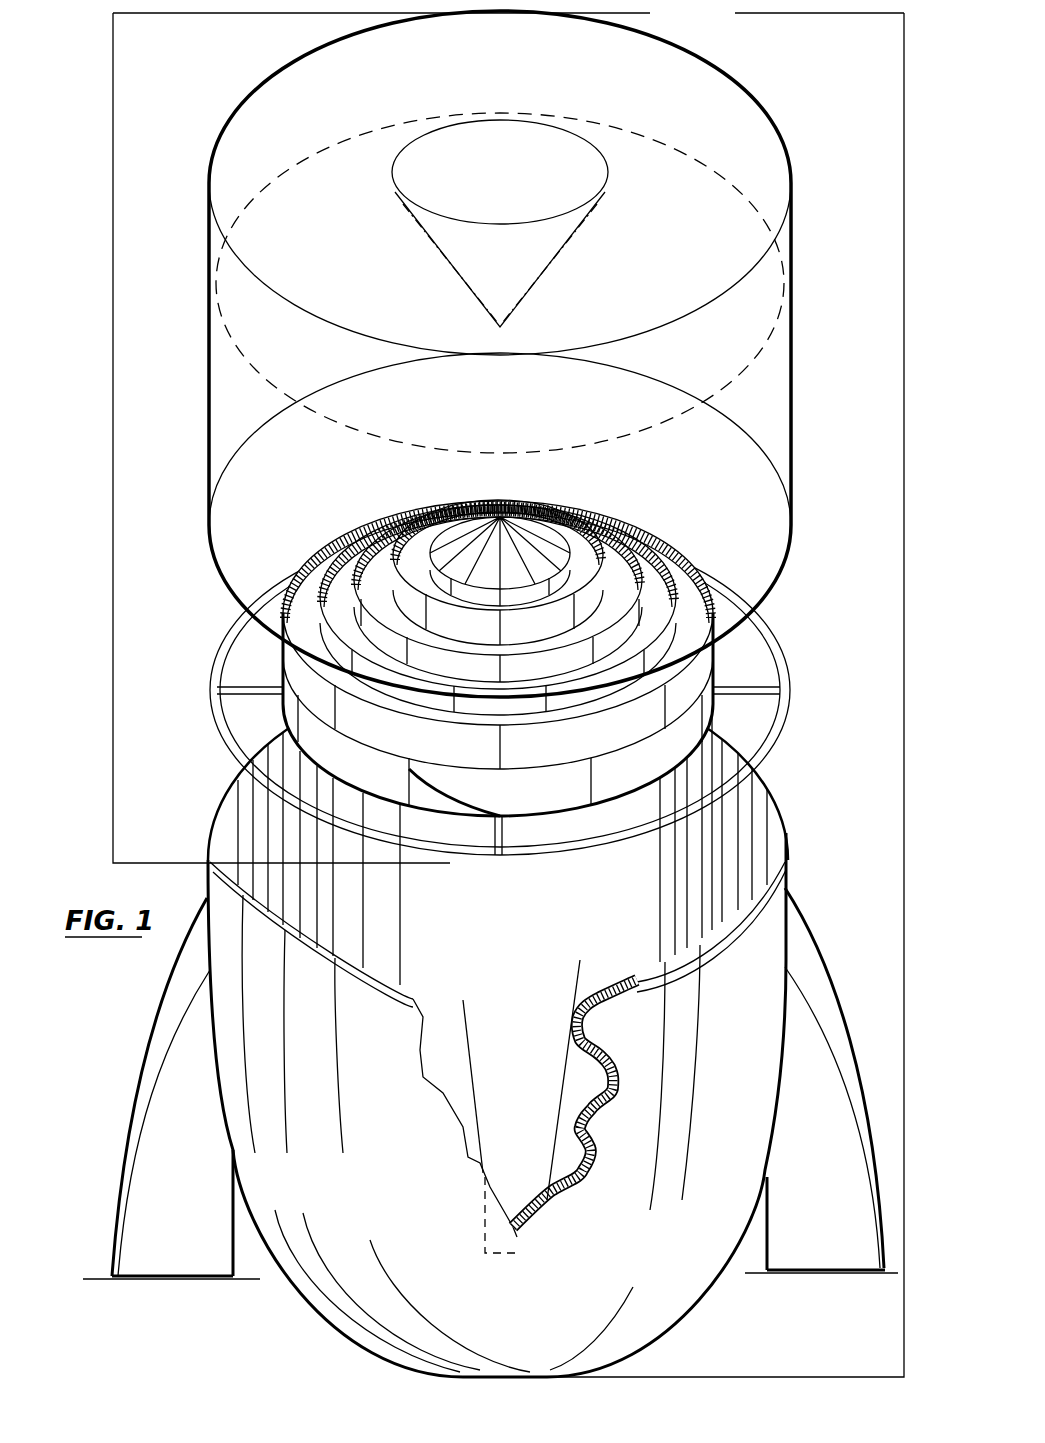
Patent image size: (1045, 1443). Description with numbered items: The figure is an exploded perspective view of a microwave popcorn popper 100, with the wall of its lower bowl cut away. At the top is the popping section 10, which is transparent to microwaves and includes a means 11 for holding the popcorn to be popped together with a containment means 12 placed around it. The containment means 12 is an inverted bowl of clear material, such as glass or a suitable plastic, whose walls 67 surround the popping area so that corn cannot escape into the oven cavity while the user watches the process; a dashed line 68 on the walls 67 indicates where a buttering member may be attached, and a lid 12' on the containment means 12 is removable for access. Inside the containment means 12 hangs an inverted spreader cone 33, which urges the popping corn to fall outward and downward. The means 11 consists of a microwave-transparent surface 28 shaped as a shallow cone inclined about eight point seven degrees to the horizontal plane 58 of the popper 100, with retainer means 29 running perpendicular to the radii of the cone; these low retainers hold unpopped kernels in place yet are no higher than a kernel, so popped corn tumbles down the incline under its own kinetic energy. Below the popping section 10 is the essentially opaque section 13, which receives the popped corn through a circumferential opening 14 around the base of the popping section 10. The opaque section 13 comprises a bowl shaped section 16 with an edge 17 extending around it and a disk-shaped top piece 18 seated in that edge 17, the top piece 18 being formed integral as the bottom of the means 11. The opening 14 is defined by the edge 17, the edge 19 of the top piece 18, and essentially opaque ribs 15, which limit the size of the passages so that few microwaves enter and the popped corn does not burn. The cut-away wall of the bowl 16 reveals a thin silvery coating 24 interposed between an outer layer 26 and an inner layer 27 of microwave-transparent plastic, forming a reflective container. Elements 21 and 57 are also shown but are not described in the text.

The popping section 10 is at (113, 437).
The microwave popcorn popper 100 is at (918, 692).
The means for holding the popcorn to be popped 11 is at (504, 652).
The containment means 12 is at (503, 348).
The lid 12' is at (500, 177).
The essentially opaque section 13 is at (531, 1040).
The circumferential opening 14 is at (235, 650).
The ribs 15 is at (230, 690).
The bowl shaped section 16 is at (378, 1190).
The edge 17 is at (342, 972).
The top piece 18 is at (527, 826).
The edge of the top piece 19 is at (440, 820).
The cup panel lines 21 is at (490, 940).
The thin silvery coating 24 is at (595, 1050).
The outer layer 26 is at (620, 1093).
The inner layer 27 is at (580, 1095).
The microwave transparent surface 28 is at (478, 608).
The retainer means 29 is at (356, 545).
The inverted spreader cone 33 is at (553, 250).
The support legs 57 is at (172, 990).
The horizontal plane 58 is at (88, 1280).
The walls 67 is at (209, 296).
The dashed line 68 is at (340, 438).